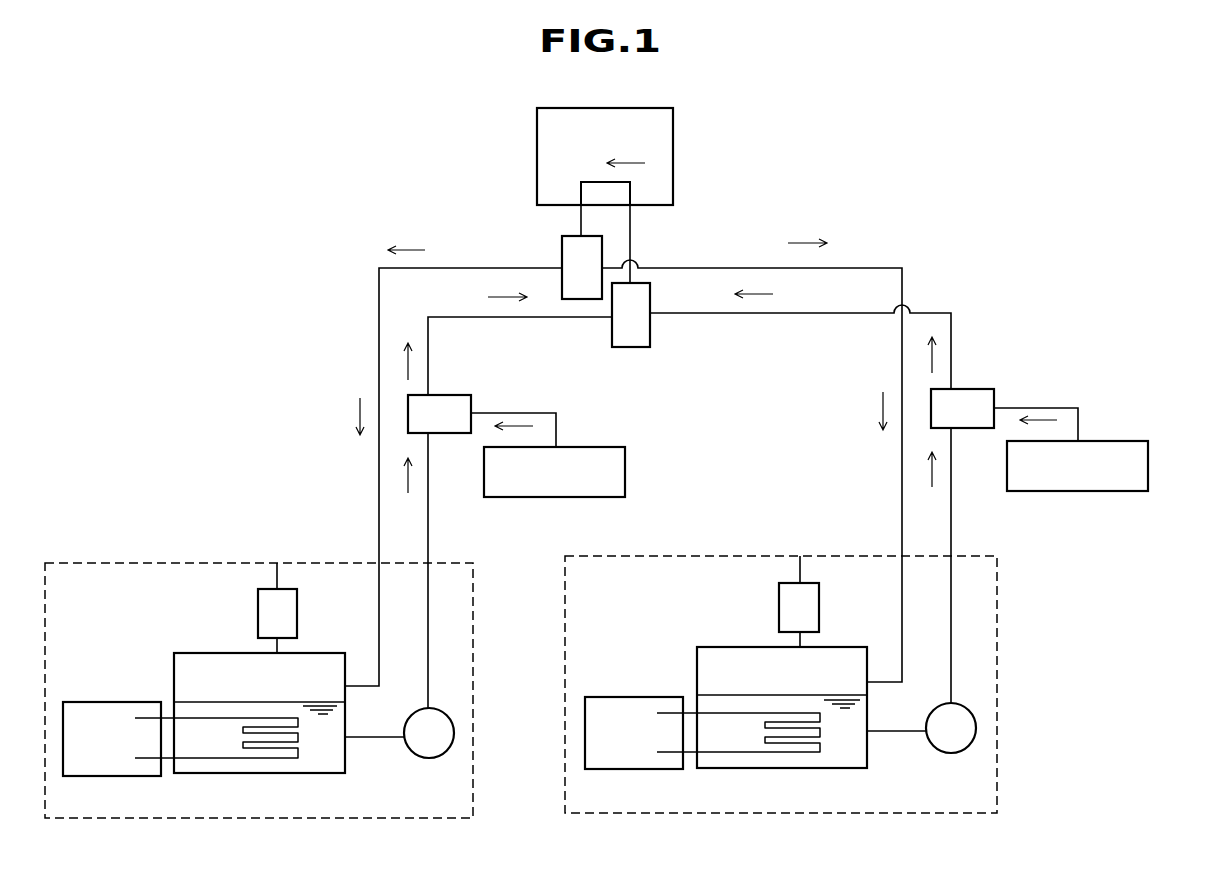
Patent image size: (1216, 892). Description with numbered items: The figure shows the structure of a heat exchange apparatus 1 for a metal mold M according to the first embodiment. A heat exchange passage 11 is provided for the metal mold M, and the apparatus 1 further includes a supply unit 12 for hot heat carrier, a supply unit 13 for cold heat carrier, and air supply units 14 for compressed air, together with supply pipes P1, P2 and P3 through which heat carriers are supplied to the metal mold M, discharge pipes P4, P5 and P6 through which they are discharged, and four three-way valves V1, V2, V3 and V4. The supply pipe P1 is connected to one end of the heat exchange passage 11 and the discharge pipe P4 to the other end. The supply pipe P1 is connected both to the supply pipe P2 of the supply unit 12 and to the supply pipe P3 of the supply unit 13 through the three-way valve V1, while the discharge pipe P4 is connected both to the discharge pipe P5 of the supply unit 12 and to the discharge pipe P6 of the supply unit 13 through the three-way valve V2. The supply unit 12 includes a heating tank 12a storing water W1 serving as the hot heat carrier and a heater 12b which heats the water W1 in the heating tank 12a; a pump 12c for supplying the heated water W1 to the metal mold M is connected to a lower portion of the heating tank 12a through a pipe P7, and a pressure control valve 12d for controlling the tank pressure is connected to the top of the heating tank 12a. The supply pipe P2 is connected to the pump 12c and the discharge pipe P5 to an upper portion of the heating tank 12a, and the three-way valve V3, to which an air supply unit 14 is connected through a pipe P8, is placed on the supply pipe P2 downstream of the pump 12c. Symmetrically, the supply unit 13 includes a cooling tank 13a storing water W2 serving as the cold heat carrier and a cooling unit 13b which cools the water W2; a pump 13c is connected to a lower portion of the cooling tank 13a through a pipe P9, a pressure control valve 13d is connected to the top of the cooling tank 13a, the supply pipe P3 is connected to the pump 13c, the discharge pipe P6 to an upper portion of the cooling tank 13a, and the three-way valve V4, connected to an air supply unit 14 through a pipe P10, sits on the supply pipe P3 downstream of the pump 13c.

The heat exchange apparatus 1 is at (298, 217).
The metal mold M is at (673, 147).
The heat exchange passage 11 is at (581, 193).
The supply pipe P1 is at (630, 226).
The supply pipe P2 is at (790, 313).
The supply pipe P3 is at (493, 317).
The discharge pipe P4 is at (581, 223).
The discharge pipe P5 is at (720, 263).
The discharge pipe P6 is at (465, 268).
The pipe P7 is at (897, 732).
The pipe P8 is at (1078, 423).
The pipe P9 is at (375, 737).
The pipe P10 is at (556, 430).
The three-way valve V1 is at (650, 333).
The three-way valve V2 is at (562, 248).
The three-way valve V3 is at (978, 389).
The three-way valve V4 is at (456, 395).
The supply unit for hot heat carrier 12 is at (997, 665).
The heating tank 12a is at (814, 683).
The heater 12b is at (603, 697).
The pump 12c is at (947, 742).
The pressure control valve 12d is at (819, 598).
The supply unit for cold heat carrier 13 is at (77, 562).
The cooling tank 13a is at (292, 688).
The cooling unit 13b is at (83, 702).
The pump 13c is at (425, 750).
The pressure control valve 13d is at (297, 605).
The air supply unit 14 is at (600, 447).
The water W1 is at (863, 705).
The water W2 is at (340, 712).